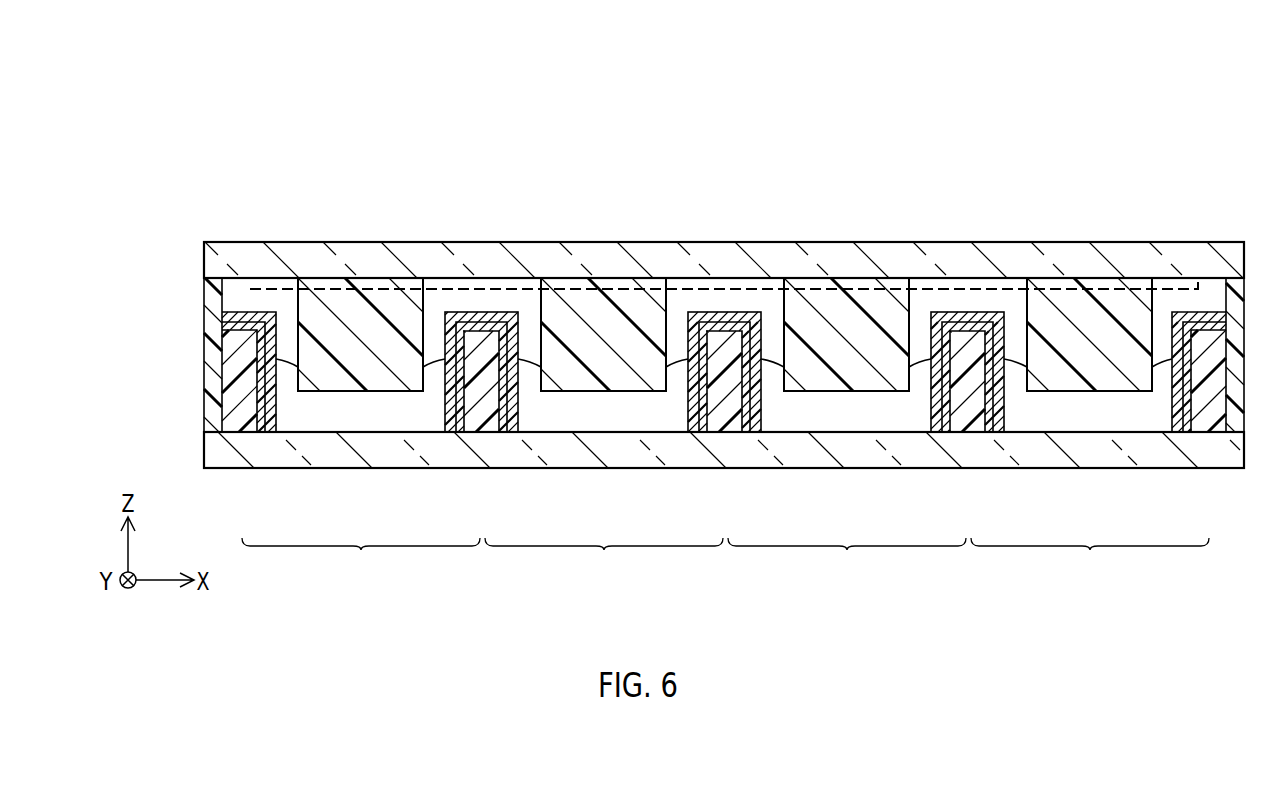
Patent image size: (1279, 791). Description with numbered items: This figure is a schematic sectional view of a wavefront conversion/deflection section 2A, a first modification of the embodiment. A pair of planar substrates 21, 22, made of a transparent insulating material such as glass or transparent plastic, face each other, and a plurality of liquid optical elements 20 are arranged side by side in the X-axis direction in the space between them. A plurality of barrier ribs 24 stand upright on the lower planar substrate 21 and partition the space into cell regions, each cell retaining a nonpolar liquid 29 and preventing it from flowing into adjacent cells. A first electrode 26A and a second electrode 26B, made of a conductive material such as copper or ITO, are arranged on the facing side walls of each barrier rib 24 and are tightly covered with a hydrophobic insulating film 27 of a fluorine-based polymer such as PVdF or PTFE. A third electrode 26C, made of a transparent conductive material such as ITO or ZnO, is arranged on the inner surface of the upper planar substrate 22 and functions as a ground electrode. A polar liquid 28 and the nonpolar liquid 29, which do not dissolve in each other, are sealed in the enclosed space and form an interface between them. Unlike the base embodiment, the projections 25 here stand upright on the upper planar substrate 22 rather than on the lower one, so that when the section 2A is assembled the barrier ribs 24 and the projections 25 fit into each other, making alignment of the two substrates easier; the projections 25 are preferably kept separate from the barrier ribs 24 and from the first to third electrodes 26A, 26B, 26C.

The wavefront conversion/deflection section 2A is at (1156, 131).
The liquid optical element 20 is at (725, 562).
The planar substrate 21 is at (297, 455).
The planar substrate 22 is at (262, 250).
The barrier rib 24 is at (724, 420).
The projection 25 is at (601, 304).
The first electrode 26A is at (509, 428).
The second electrode 26B is at (704, 428).
The third electrode 26C is at (1168, 282).
The hydrophobic insulating film 27 is at (455, 428).
The polar liquid 28 is at (918, 305).
The nonpolar liquid 29 is at (850, 405).